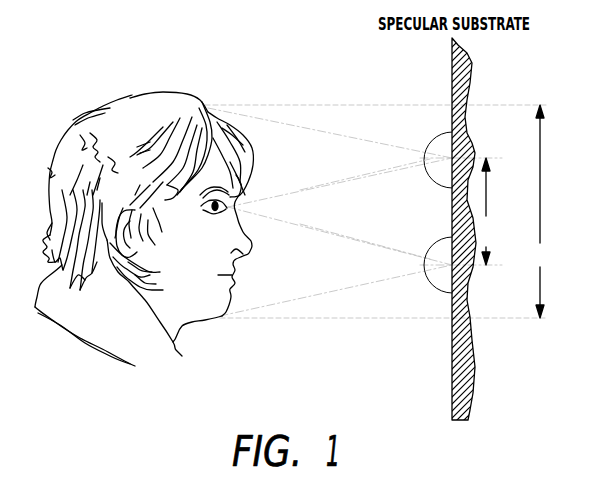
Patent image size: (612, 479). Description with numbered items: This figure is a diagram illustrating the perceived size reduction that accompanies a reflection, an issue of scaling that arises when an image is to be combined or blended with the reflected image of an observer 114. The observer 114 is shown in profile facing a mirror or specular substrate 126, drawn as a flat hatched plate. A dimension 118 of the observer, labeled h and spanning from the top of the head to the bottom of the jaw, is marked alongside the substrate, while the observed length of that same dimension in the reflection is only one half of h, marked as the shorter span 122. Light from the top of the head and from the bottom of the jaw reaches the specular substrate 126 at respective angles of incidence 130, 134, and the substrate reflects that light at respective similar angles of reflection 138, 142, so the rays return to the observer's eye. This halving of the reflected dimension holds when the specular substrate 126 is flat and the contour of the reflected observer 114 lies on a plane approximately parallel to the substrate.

The observer 114 is at (133, 105).
The dimension 118 is at (540, 220).
The observed length in the reflection 122 is at (487, 212).
The specular substrate 126 is at (452, 345).
The angle of incidence 130 is at (438, 135).
The angle of incidence 134 is at (432, 285).
The angle of reflection 138 is at (432, 180).
The angle of reflection 142 is at (432, 245).